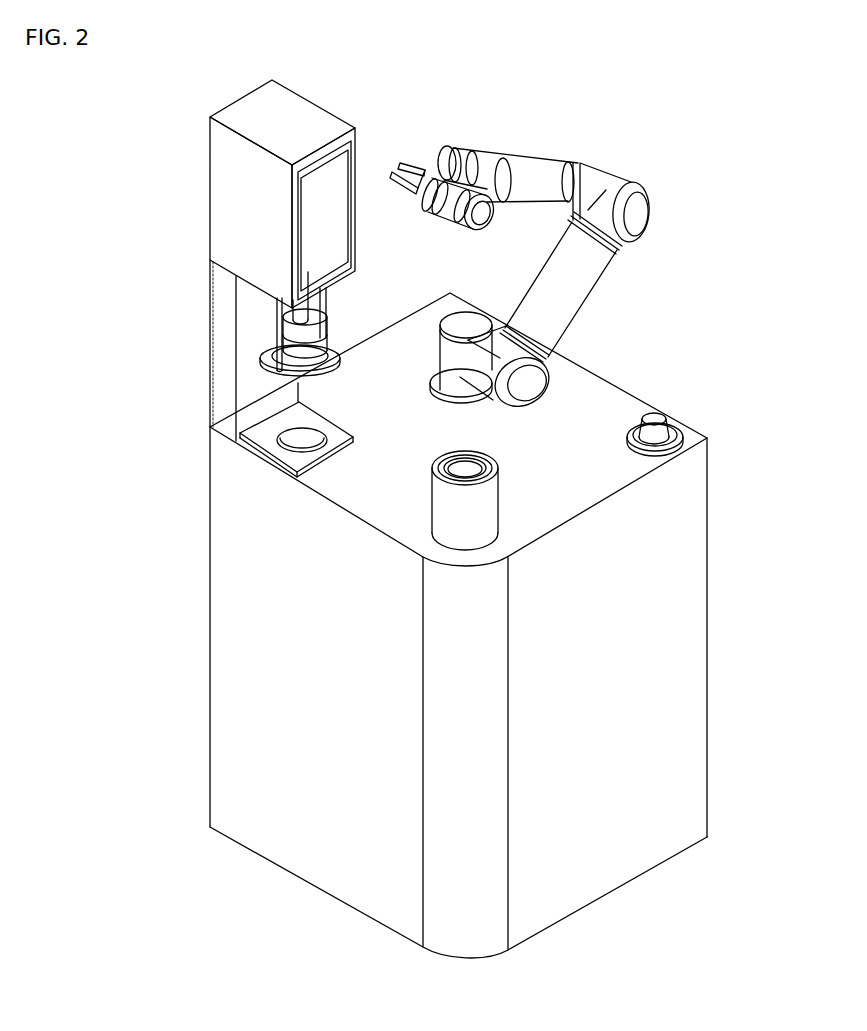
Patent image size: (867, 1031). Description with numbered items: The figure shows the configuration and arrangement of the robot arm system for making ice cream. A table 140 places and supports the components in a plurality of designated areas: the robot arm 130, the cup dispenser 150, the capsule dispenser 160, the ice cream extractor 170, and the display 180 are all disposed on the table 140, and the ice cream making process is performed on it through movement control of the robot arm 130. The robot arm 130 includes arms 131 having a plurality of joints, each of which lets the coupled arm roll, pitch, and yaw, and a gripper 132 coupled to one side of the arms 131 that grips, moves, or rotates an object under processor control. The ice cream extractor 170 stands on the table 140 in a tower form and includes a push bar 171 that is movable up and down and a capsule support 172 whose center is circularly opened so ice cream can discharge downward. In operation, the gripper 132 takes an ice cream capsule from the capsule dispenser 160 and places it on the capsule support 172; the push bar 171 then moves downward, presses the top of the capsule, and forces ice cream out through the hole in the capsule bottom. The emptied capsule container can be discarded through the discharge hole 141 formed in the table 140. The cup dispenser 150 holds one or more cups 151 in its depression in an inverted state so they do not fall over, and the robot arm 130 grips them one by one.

The robot arm 130 is at (589, 150).
The arms 131 is at (469, 142).
The gripper 132 is at (424, 160).
The table 140 is at (572, 490).
The discharge hole 141 is at (303, 445).
The cup dispenser 150 is at (684, 454).
The cup 151 is at (654, 417).
The capsule dispenser 160 is at (420, 515).
The ice cream extractor 170 is at (282, 316).
The push bar 171 is at (297, 342).
The capsule support 172 is at (297, 380).
The display 180 is at (347, 169).